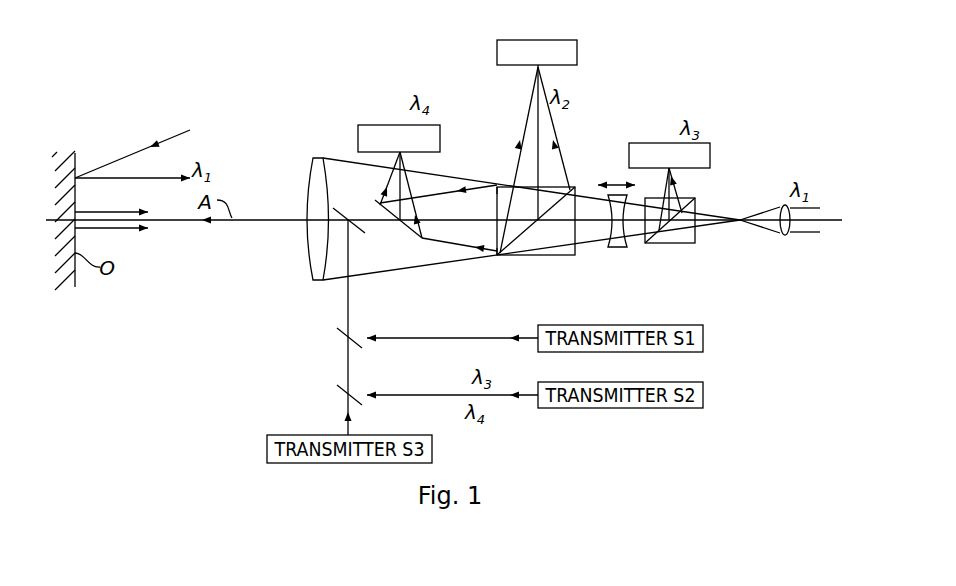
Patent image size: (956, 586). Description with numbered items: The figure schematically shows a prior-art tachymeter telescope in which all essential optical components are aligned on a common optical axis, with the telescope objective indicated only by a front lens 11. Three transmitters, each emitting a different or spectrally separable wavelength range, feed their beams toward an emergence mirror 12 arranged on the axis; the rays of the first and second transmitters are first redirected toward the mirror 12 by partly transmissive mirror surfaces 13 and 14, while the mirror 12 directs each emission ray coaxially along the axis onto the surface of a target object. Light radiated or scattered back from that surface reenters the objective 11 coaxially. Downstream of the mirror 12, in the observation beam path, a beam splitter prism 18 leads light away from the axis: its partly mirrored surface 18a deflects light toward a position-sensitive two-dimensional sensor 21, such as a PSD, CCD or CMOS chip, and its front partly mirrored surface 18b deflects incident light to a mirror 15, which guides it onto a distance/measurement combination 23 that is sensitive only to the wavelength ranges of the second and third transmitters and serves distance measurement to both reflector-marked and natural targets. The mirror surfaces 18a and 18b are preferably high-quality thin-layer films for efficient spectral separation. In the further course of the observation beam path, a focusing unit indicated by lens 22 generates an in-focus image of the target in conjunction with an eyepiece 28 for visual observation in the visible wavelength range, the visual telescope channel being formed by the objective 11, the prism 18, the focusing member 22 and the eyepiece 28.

The front lens 11 is at (318, 157).
The emergence mirror 12 is at (337, 208).
The partly transmissive mirror surface 13 is at (336, 328).
The partly transmissive mirror surface 14 is at (336, 385).
The mirror 15 is at (404, 232).
The beam splitter prism 18 is at (567, 254).
The partly mirrored surface 18a is at (512, 246).
The front partly mirrored surface 18b is at (492, 185).
The position-sensitive two-dimensional sensor 21 is at (542, 40).
The focusing member 22 is at (619, 247).
The distance/measurement combination 23 is at (393, 126).
The eyepiece 28 is at (787, 245).